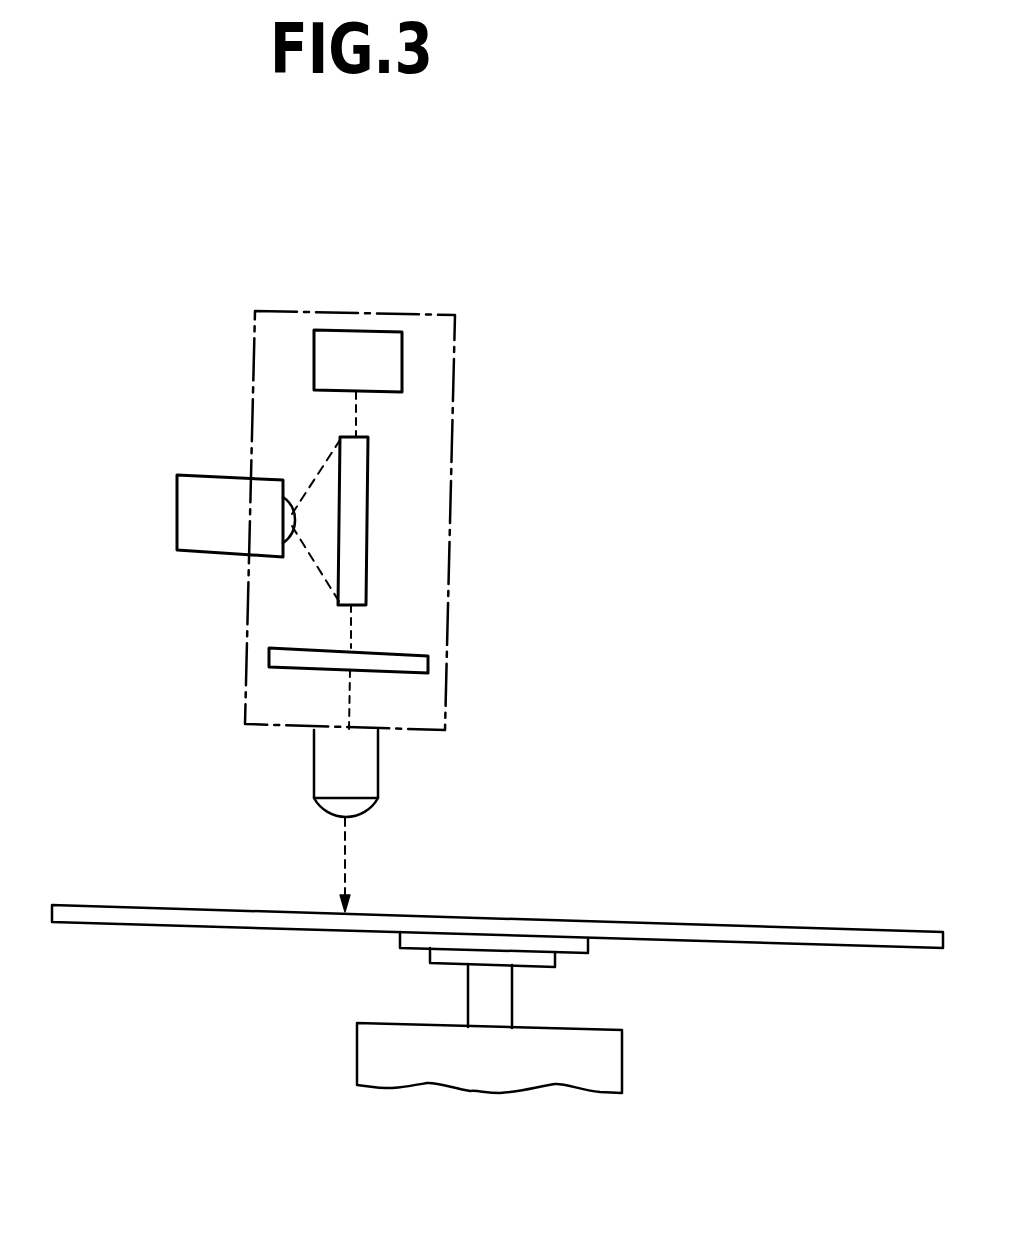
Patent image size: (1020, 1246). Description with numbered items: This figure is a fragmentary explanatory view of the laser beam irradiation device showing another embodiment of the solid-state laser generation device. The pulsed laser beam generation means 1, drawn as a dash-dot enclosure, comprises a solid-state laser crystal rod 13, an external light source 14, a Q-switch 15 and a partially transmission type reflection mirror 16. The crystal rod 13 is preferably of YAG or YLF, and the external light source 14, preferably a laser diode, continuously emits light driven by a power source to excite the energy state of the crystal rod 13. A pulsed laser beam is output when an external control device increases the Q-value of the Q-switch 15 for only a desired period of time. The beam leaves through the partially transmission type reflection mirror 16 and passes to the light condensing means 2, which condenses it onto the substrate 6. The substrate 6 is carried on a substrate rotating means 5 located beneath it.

The pulsed laser beam generation means 1 is at (455, 359).
The Q-switch 15 is at (314, 348).
The solid-state laser crystal rod 13 is at (368, 566).
The external light source 14 is at (177, 500).
The partially transmission type reflection mirror 16 is at (428, 664).
The light condensing means 2 is at (378, 780).
The substrate 6 is at (840, 928).
The substrate rotating means 5 is at (622, 1062).